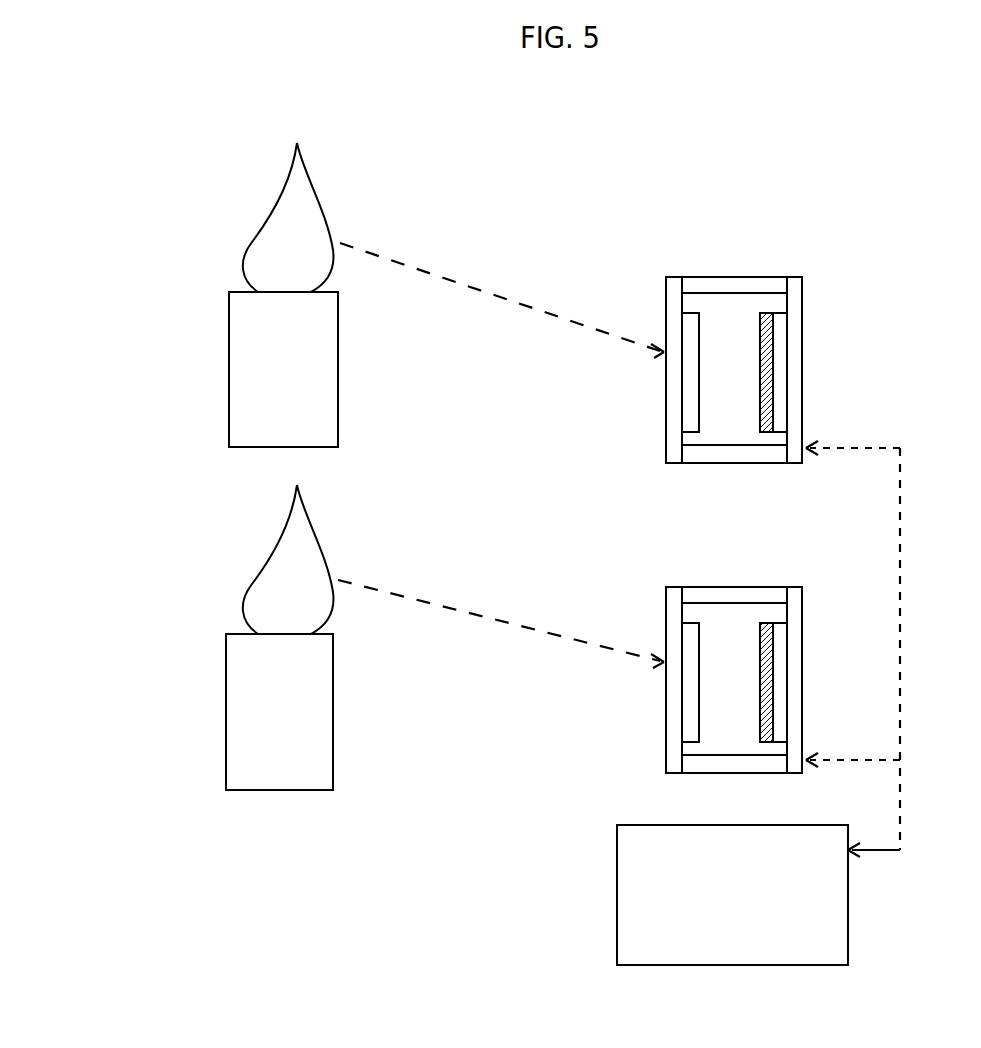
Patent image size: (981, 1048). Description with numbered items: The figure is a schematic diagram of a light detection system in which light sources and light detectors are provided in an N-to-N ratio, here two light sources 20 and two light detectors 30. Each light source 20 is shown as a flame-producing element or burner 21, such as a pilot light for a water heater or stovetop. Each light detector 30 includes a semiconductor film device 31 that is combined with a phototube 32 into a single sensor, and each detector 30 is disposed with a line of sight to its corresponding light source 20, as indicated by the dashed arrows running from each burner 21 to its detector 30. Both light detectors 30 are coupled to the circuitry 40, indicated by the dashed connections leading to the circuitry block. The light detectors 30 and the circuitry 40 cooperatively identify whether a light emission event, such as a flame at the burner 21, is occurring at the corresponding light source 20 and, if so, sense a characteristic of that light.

The light source 20 is at (258, 327).
The burner 21 is at (292, 275).
The light detector 30 is at (802, 362).
The semiconductor film device 31 is at (780, 338).
The phototube 32 is at (697, 337).
The circuitry 40 is at (729, 937).